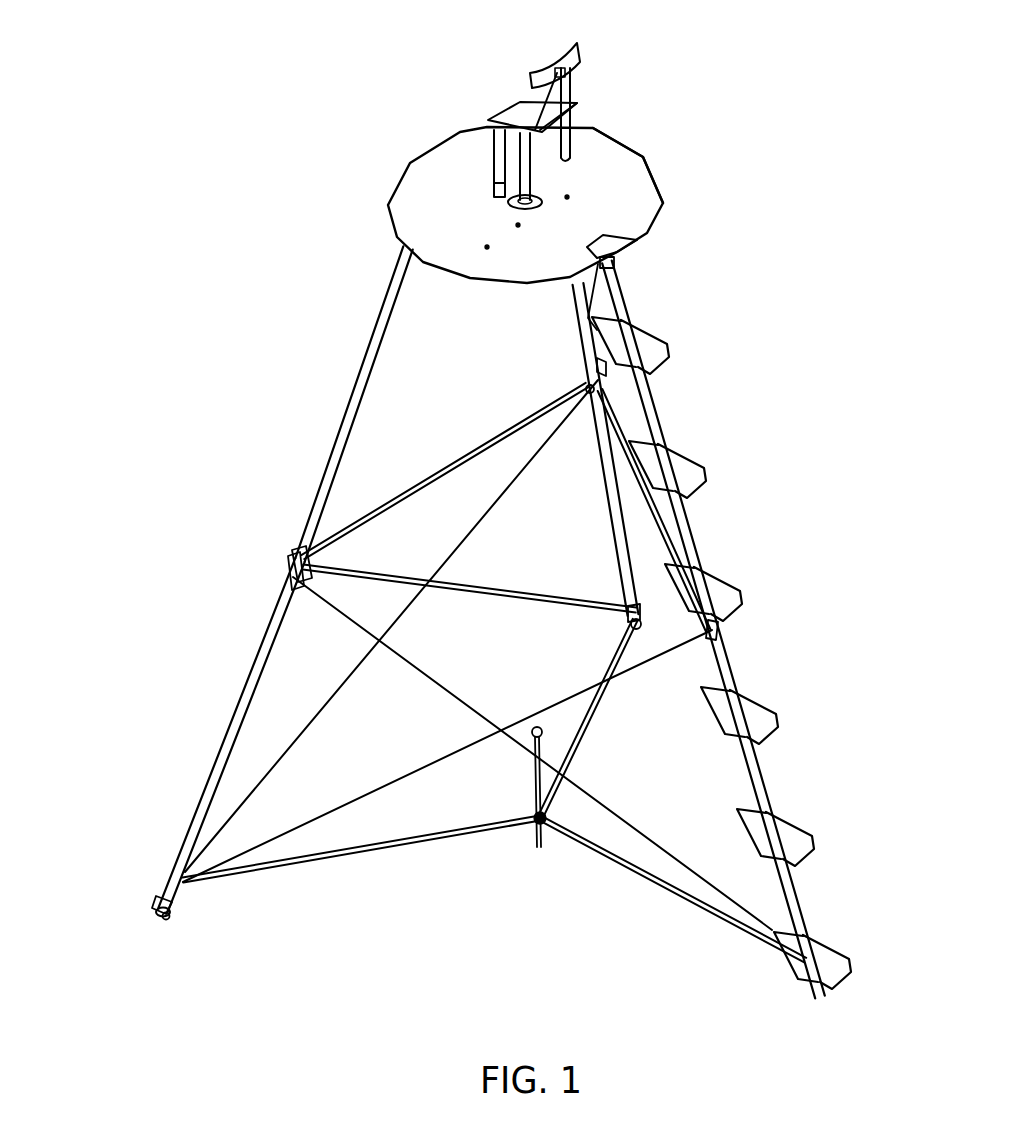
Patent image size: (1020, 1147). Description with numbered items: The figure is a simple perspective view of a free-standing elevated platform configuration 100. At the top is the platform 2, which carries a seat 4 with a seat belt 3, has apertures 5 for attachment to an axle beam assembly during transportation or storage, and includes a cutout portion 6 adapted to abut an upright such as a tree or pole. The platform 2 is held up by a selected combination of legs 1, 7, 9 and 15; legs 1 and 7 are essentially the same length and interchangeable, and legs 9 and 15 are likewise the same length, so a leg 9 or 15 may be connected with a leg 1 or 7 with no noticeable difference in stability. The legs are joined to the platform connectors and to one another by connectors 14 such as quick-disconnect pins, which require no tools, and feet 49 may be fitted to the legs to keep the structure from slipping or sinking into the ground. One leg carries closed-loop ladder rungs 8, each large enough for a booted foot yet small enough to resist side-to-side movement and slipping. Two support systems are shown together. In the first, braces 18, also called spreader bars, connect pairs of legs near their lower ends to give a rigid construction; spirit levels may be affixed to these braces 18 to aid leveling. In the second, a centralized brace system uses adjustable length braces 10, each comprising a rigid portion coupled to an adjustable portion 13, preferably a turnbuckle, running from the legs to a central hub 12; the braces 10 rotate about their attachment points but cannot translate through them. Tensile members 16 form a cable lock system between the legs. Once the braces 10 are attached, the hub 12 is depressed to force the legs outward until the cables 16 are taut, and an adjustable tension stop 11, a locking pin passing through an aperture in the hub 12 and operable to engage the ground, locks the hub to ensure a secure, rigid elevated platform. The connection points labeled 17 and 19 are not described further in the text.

The free-standing elevated platform configuration 100 is at (264, 220).
The leg 1 is at (374, 345).
The platform 2 is at (442, 187).
The seat belt 3 is at (496, 157).
The seat 4 is at (513, 101).
The apertures 5 is at (598, 175).
The cutout portion 6 is at (618, 233).
The leg 7 is at (648, 403).
The rung 8 is at (717, 575).
The leg 9 is at (768, 773).
The adjustable length brace 10 is at (343, 862).
The adjustable tension stop 11 is at (537, 847).
The central hub 12 is at (533, 825).
The adjustable portion 13 is at (185, 882).
The connector 14 is at (615, 263).
The leg 15 is at (618, 527).
The tensile member 16 is at (372, 638).
The strut bracket 17 is at (602, 367).
The brace 18 is at (648, 476).
The strut joint 19 is at (585, 385).
The foot 49 is at (165, 916).